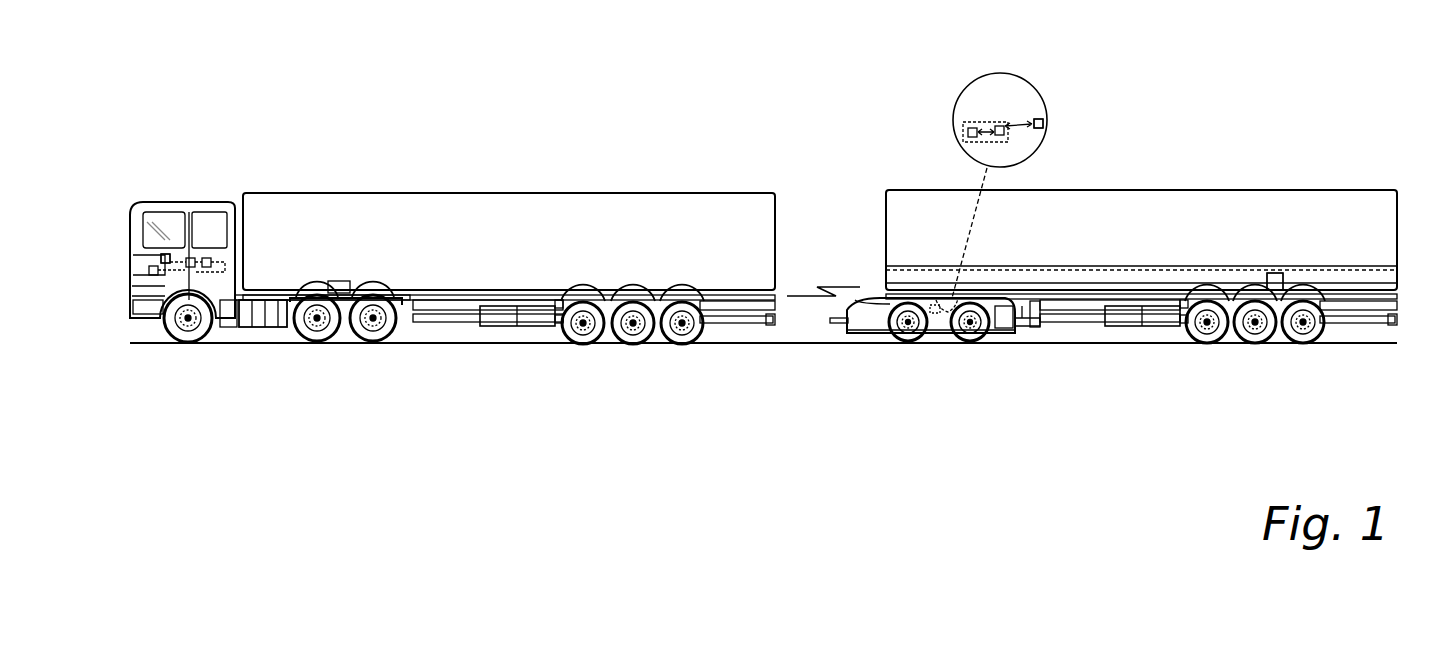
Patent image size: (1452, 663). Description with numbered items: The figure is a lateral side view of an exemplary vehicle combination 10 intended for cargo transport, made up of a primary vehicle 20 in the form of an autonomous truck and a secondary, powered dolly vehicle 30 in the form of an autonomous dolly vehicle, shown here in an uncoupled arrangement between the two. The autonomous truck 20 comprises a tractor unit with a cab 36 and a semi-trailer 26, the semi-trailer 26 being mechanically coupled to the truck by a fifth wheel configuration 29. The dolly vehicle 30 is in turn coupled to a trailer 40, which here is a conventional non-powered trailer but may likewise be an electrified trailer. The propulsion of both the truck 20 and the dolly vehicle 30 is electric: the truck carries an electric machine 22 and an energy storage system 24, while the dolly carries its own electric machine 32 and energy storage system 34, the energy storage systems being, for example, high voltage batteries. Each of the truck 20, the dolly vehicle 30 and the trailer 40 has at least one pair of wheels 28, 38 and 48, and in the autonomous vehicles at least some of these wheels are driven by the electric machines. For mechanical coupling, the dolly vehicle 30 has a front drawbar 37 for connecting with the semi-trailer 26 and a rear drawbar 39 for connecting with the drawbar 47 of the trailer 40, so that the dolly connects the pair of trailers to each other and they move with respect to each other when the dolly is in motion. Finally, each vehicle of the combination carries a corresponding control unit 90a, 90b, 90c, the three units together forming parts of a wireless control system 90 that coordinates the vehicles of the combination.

The vehicle combination 10 is at (150, 120).
The primary vehicle 20 is at (256, 327).
The electric machine 22 is at (195, 258).
The energy storage system 24 is at (210, 262).
The semi-trailer 26 is at (553, 215).
The pair of wheels 28 is at (318, 342).
The fifth wheel configuration 29 is at (340, 281).
The powered dolly vehicle 30 is at (870, 340).
The electric machine 32 is at (963, 134).
The energy storage system 34 is at (1002, 128).
The cab 36 is at (133, 252).
The front drawbar 37 is at (838, 325).
The pair of wheels 38 is at (970, 340).
The rear drawbar 39 is at (1020, 335).
The trailer 40 is at (1213, 210).
The drawbar 47 is at (1032, 340).
The pair of wheels 48 is at (1303, 345).
The wireless control system 90 is at (722, 204).
The control unit 90a is at (168, 255).
The control unit 90b is at (1040, 124).
The control unit 90c is at (1275, 273).